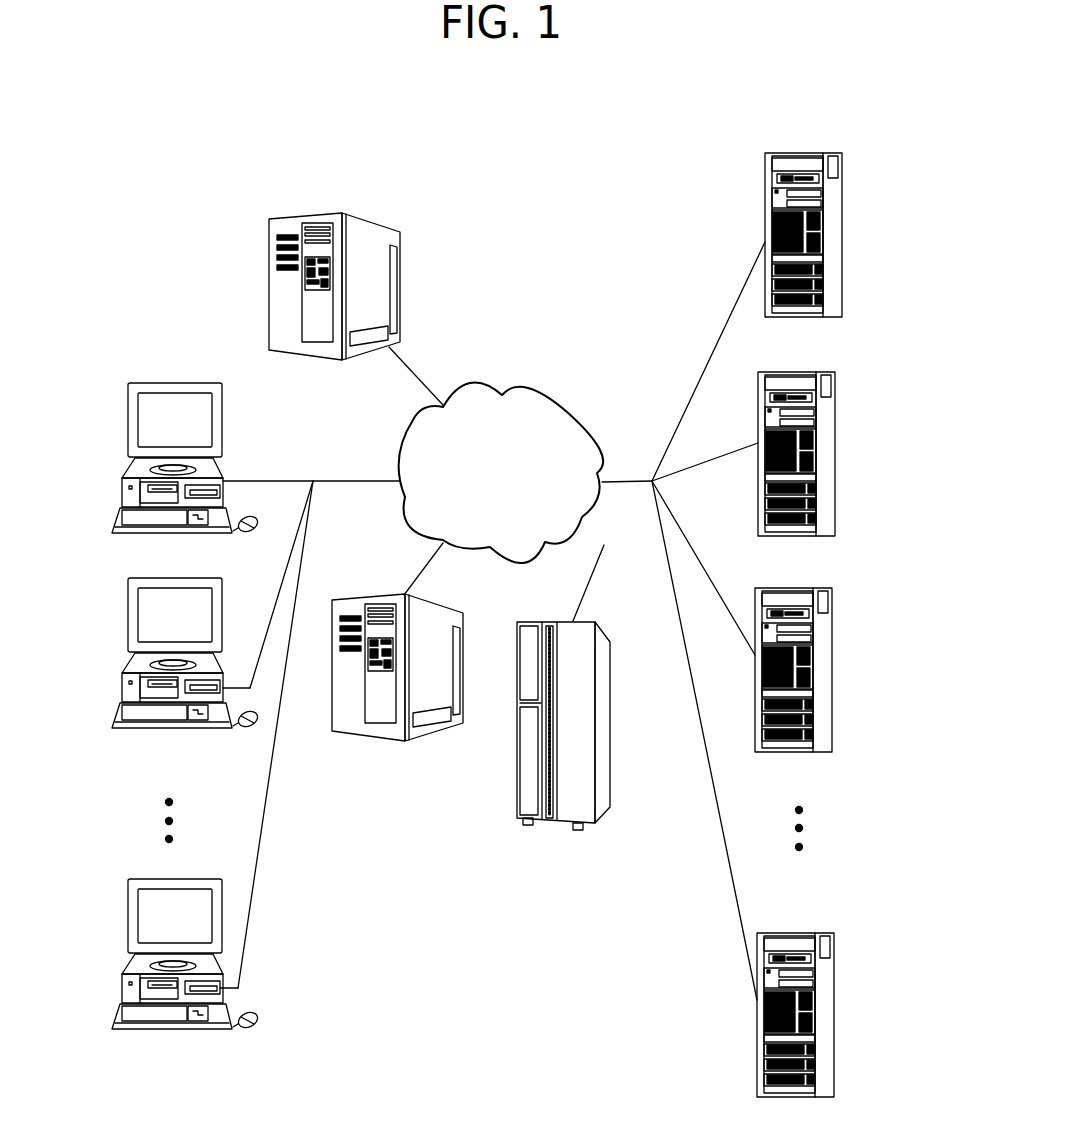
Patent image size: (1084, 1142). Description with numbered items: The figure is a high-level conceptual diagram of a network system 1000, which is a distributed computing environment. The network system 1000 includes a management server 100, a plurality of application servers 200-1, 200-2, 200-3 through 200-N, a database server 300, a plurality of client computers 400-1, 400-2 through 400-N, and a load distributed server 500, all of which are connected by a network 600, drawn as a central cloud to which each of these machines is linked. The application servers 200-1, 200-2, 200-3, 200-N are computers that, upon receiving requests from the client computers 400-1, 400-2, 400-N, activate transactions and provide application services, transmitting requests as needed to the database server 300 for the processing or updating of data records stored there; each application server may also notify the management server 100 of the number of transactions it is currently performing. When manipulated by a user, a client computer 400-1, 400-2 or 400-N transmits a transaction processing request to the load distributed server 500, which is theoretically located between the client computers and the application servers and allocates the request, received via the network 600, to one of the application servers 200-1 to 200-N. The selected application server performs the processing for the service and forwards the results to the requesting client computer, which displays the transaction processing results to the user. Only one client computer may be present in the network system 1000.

The network system 1000 is at (605, 244).
The management server 100 is at (562, 816).
The application server 200-1 is at (843, 212).
The application server 200-2 is at (835, 432).
The application server 200-3 is at (832, 650).
The application server 200-N is at (834, 988).
The database server 300 is at (366, 740).
The client computer 400-1 is at (121, 490).
The client computer 400-2 is at (121, 687).
The client computer 400-N is at (121, 987).
The load distributed server 500 is at (332, 213).
The network 600 is at (542, 387).